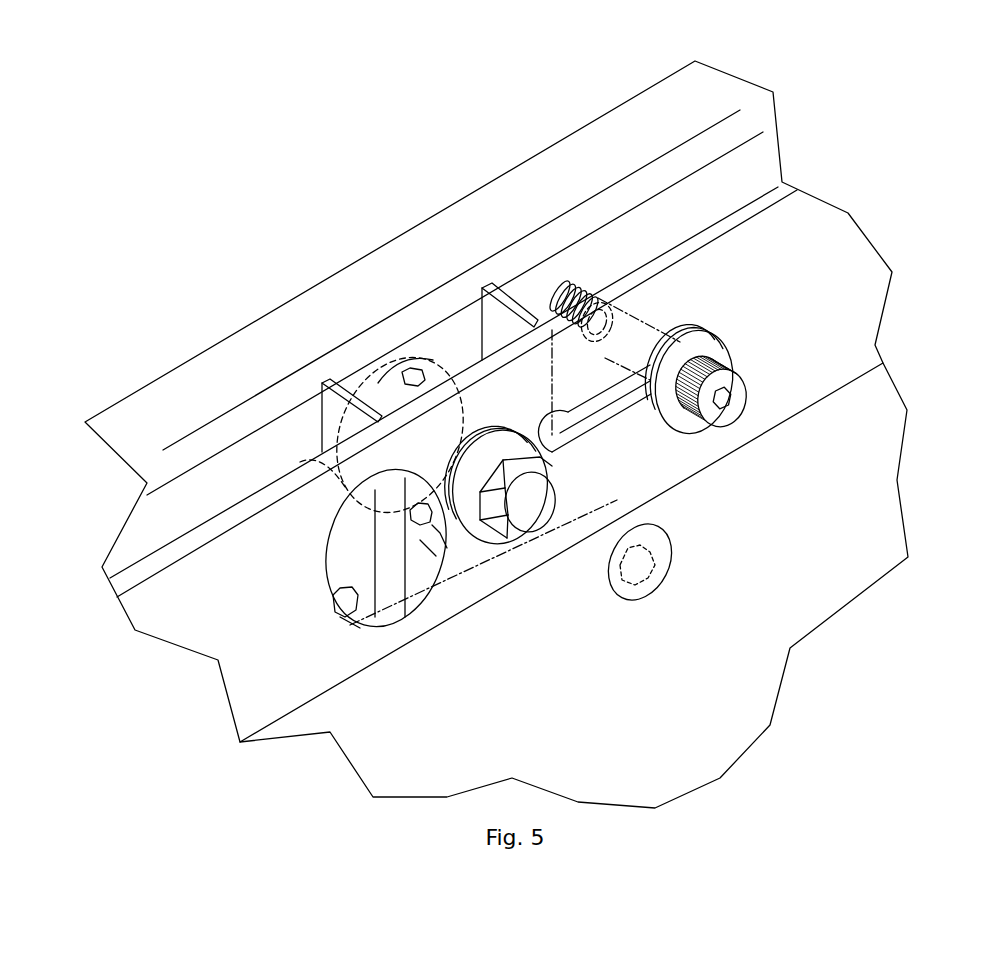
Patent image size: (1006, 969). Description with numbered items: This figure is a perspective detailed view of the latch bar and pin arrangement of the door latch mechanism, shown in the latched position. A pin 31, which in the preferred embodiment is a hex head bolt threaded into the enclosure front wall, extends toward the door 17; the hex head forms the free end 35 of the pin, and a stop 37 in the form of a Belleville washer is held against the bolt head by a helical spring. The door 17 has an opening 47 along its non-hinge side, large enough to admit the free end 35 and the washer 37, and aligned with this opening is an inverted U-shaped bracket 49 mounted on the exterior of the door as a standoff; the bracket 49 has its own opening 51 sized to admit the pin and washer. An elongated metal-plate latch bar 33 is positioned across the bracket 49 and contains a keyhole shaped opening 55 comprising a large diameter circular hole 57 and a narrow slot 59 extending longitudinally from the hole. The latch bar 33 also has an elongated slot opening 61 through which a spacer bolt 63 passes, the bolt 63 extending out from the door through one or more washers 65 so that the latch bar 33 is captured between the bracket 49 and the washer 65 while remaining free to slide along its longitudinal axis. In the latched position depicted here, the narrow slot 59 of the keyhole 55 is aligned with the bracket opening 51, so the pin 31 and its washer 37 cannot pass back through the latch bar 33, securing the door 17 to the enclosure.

The door 17 is at (808, 522).
The pin 31 is at (539, 500).
The latch bar 33 is at (242, 502).
The free end 35 is at (530, 512).
The stop 37 is at (505, 548).
The opening 47 is at (425, 375).
The bracket 49 is at (328, 407).
The bracket opening 51 is at (340, 588).
The keyhole shaped opening 55 is at (348, 621).
The circular hole 57 is at (327, 542).
The slot 59 is at (442, 525).
The slot opening 61 is at (597, 425).
The spacer bolt 63 is at (727, 373).
The washer 65 is at (687, 342).